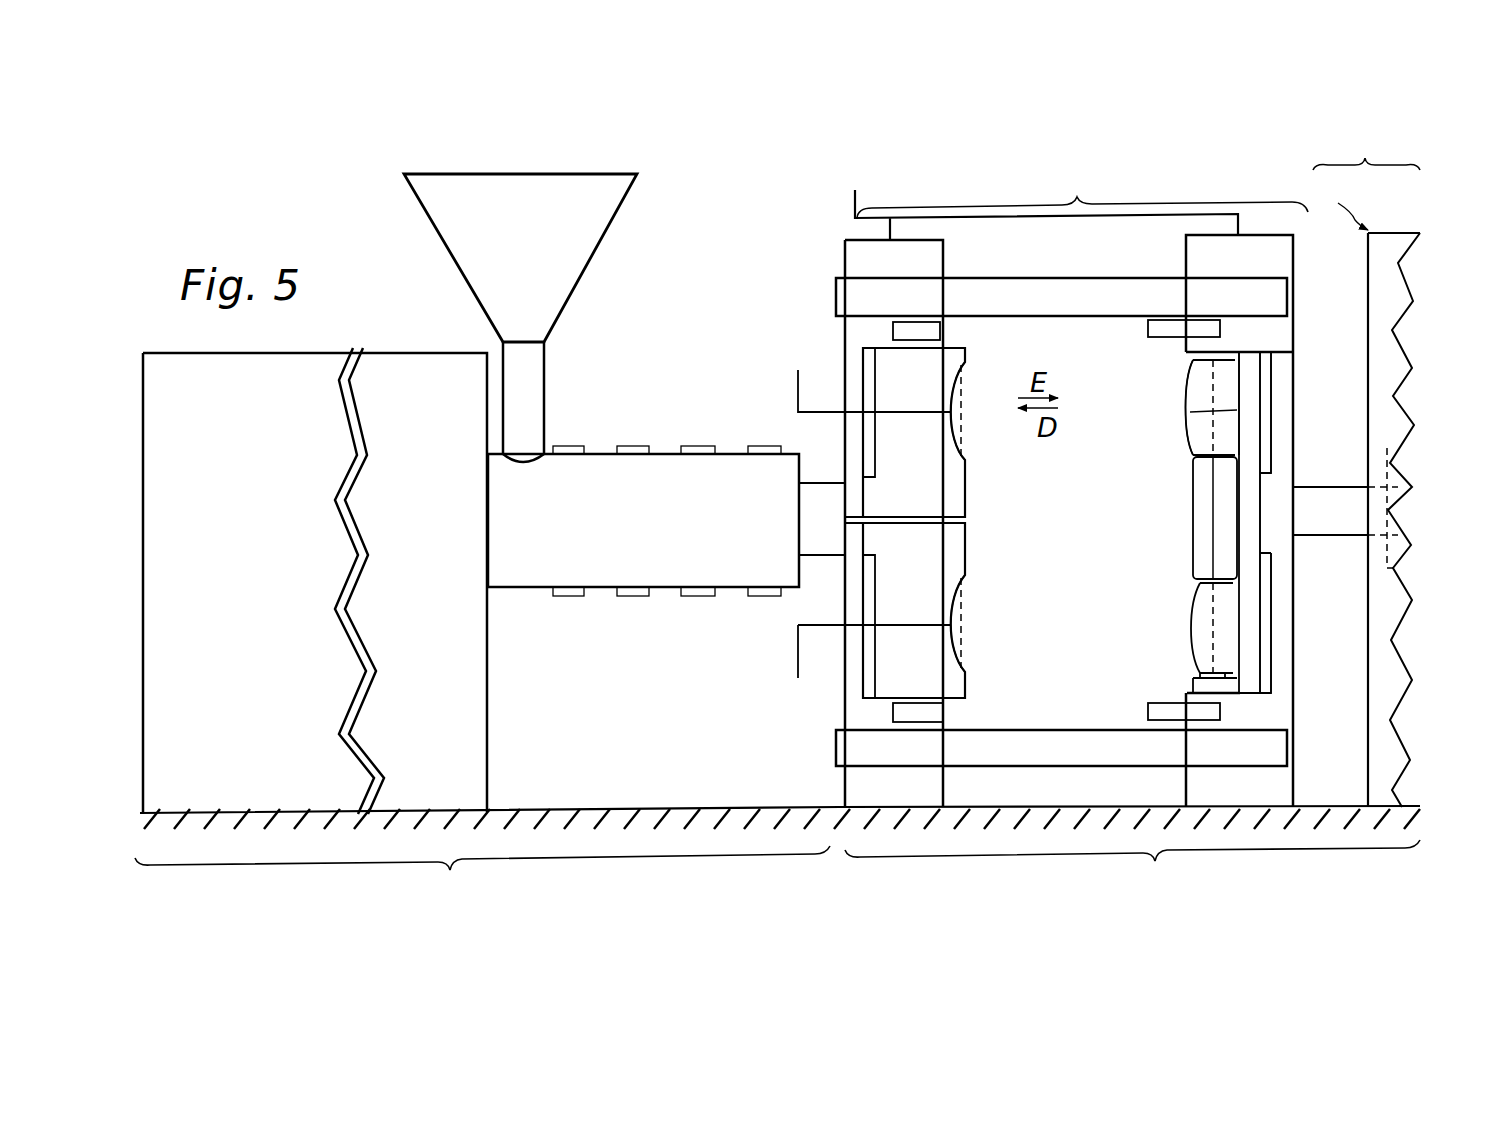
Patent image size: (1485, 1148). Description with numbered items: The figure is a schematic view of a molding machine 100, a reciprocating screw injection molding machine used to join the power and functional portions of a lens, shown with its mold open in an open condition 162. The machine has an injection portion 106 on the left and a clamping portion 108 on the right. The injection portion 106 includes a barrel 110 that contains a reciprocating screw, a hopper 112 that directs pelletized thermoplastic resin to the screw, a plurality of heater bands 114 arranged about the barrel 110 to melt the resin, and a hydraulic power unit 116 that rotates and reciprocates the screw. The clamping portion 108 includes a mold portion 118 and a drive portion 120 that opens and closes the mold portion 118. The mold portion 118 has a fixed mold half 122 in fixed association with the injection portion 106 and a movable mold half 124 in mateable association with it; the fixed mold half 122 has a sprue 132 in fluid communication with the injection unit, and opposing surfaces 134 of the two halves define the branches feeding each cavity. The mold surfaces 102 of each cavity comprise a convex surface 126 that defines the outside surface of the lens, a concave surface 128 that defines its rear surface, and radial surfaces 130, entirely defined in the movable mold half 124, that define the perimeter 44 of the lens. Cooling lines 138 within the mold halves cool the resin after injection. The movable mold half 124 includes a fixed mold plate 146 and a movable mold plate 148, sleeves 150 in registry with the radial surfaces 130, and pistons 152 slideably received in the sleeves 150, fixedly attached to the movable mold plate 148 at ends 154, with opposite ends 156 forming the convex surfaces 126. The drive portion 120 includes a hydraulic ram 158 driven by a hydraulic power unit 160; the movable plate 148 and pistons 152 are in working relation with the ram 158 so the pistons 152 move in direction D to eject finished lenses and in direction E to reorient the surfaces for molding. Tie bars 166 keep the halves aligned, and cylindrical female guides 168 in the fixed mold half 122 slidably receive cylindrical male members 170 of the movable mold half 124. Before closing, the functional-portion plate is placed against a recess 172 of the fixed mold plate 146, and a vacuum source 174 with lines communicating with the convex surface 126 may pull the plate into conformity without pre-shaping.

The perimeter 44 is at (952, 401).
The molding machine 100 is at (1292, 143).
The mold surfaces 102 is at (952, 430).
The injection portion 106 is at (482, 877).
The clamping portion 108 is at (1132, 869).
The barrel 110 is at (518, 592).
The hopper 112 is at (552, 169).
The heater bands 114 is at (742, 447).
The hydraulic power unit 116 is at (232, 348).
The mold portion 118 is at (1082, 194).
The drive portion 120 is at (1307, 178).
The fixed mold half 122 is at (841, 256).
The movable mold half 124 is at (1182, 254).
The convex surface 126 is at (952, 412).
The concave surface 128 is at (1182, 402).
The radial surfaces 130 is at (1184, 362).
The sprue 132 is at (950, 512).
The opposing surfaces 134 is at (968, 548).
The cooling lines 138 is at (1046, 223).
The fixed mold plate 146 is at (955, 493).
The movable mold plate 148 is at (1250, 540).
The sleeves 150 is at (1218, 360).
The pistons 152 is at (1243, 368).
The ends 154 is at (1237, 397).
The ends 156 is at (1240, 410).
The hydraulic ram 158 is at (1329, 486).
The hydraulic power unit 160 is at (1413, 356).
The open condition 162 is at (1146, 193).
The tie bars 166 is at (1092, 248).
The cylindrical female guides 168 is at (947, 329).
The cylindrical male members 170 is at (1142, 328).
The recess 172 is at (965, 460).
The vacuum source 174 is at (798, 386).